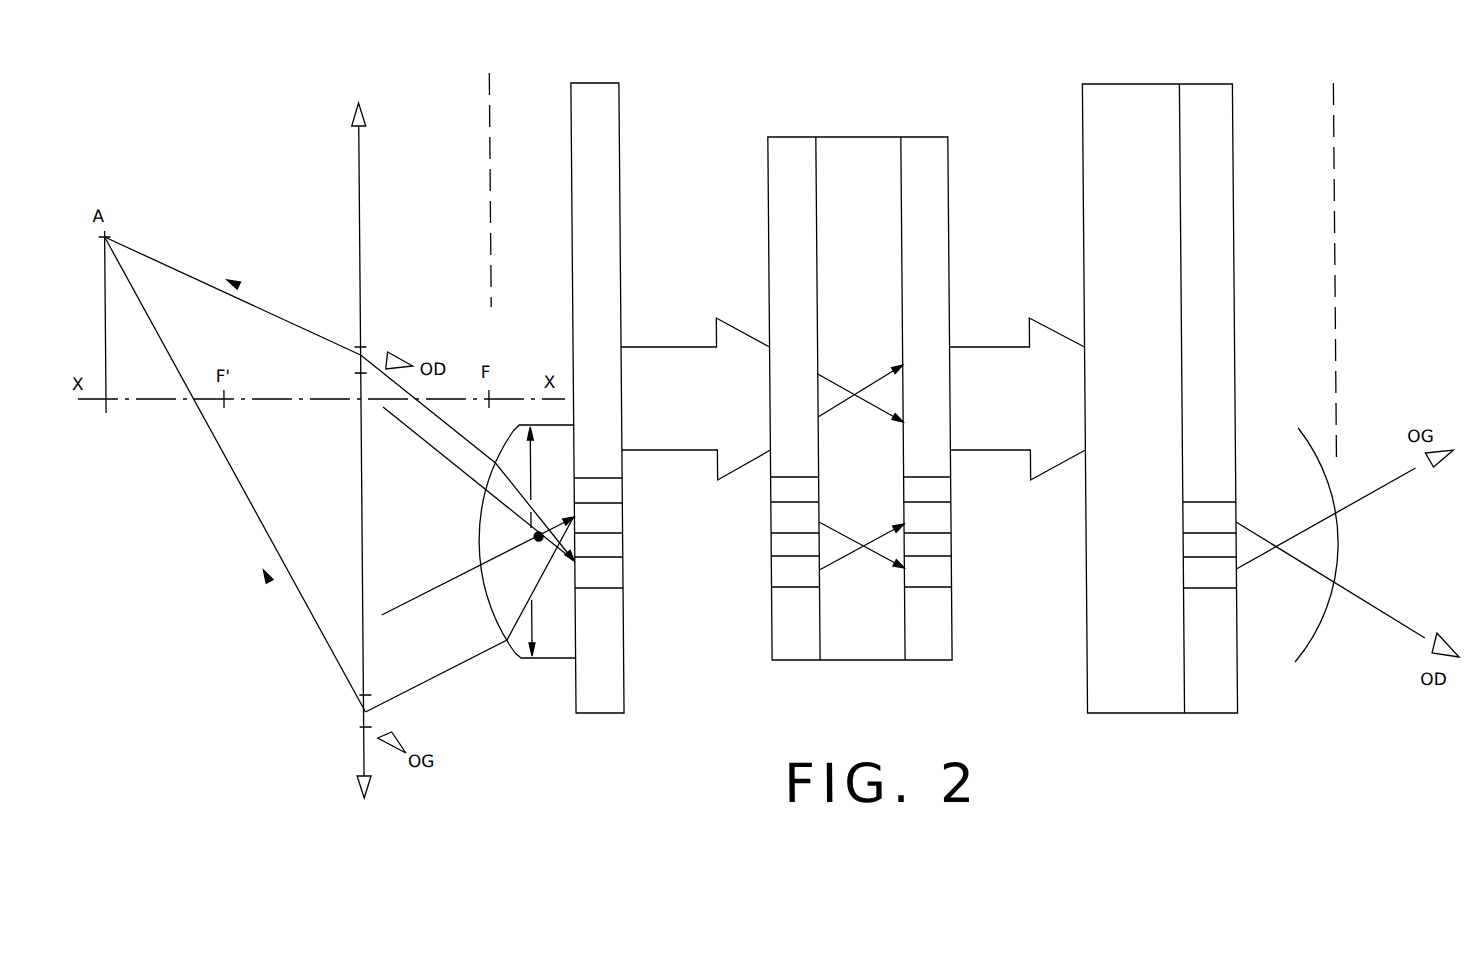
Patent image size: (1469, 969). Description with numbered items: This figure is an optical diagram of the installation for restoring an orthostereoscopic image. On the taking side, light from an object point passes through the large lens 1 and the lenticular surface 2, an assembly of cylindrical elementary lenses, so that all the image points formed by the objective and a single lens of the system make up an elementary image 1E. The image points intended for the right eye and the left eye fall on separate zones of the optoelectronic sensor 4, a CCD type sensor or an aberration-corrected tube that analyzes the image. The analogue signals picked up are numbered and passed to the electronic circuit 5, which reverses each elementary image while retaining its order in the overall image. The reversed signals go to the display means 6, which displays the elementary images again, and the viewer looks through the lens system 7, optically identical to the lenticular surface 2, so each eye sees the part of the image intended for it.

The lens 1 is at (360, 173).
The lenticular surface 2 is at (504, 107).
The elementary image 1E is at (630, 428).
The image sensor array 4 is at (608, 115).
The electronic circuit 5 is at (862, 158).
The display means 6 is at (1097, 107).
The lens system 7 is at (1287, 123).